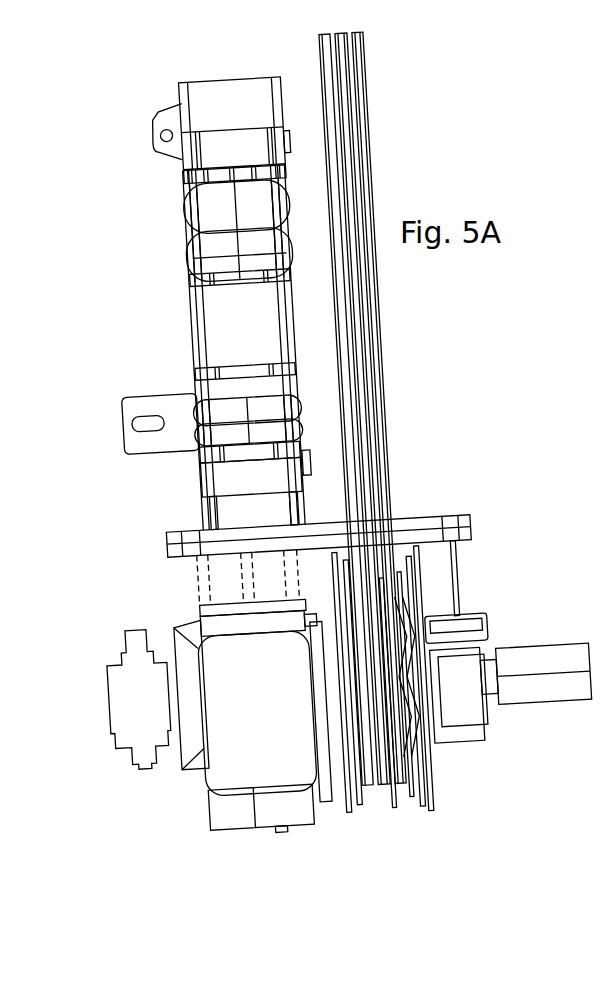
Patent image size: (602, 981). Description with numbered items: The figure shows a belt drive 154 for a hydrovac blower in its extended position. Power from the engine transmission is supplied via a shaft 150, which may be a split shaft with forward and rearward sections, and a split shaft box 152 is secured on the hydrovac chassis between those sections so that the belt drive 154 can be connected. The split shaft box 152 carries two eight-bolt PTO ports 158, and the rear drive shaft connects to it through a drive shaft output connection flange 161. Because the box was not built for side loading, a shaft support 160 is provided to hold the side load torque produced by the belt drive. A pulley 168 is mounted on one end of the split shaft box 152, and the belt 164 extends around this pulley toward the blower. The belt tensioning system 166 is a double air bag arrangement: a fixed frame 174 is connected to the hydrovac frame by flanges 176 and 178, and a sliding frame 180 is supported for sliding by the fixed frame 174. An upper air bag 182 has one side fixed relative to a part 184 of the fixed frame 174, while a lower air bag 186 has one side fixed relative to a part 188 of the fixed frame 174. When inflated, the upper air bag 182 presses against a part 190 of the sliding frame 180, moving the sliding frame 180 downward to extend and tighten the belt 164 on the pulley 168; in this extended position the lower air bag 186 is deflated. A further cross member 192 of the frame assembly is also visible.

The shaft 150 is at (567, 650).
The split shaft box 152 is at (200, 640).
The belt drive 154 is at (320, 434).
The PTO ports 158 is at (232, 740).
The shaft support 160 is at (466, 680).
The drive shaft output connection flange 161 is at (128, 632).
The belt 164 is at (403, 408).
The belt tensioning system 166 is at (314, 317).
The pulley 168 is at (430, 790).
The fixed frame 174 is at (203, 72).
The flange 176 is at (155, 120).
The flange 178 is at (124, 398).
The sliding frame 180 is at (434, 494).
The upper air bag 182 is at (185, 197).
The part of the fixed frame 184 is at (222, 165).
The lower air bag 186 is at (200, 443).
The part of the fixed frame 188 is at (200, 467).
The part of the sliding frame 190 is at (205, 290).
The cross member 192 is at (205, 382).